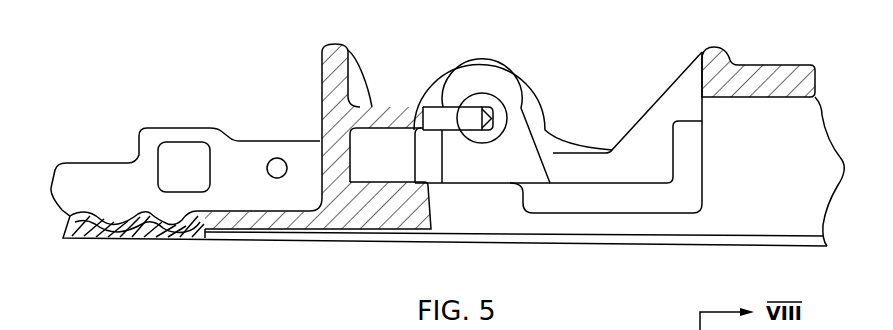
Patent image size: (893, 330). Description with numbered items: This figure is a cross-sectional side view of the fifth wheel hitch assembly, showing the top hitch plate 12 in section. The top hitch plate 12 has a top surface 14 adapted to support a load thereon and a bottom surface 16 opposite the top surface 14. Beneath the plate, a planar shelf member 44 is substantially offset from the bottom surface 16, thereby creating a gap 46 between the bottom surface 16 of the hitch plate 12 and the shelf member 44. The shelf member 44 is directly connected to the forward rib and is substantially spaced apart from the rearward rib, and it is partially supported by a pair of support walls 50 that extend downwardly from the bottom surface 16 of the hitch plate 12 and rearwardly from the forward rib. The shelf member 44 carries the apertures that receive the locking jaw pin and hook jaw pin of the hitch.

The top hitch plate 12 is at (188, 124).
The top surface 14 is at (180, 240).
The bottom surface 16 is at (497, 183).
The planar shelf member 44 is at (398, 107).
The gap 46 is at (502, 147).
The support walls 50 is at (383, 170).